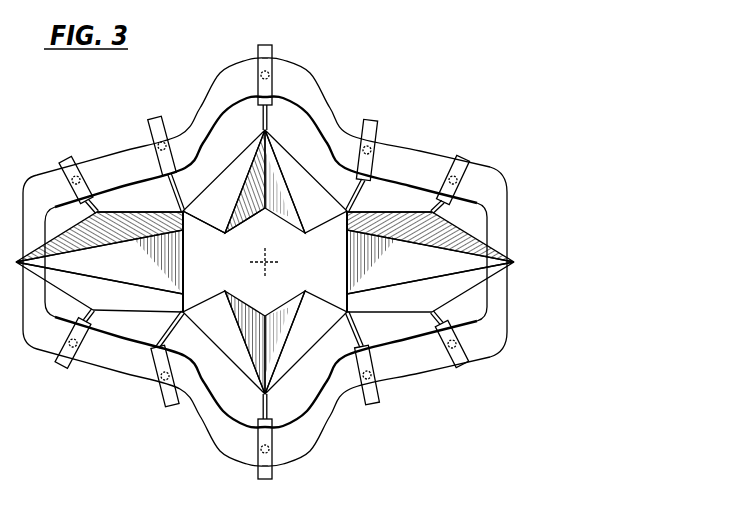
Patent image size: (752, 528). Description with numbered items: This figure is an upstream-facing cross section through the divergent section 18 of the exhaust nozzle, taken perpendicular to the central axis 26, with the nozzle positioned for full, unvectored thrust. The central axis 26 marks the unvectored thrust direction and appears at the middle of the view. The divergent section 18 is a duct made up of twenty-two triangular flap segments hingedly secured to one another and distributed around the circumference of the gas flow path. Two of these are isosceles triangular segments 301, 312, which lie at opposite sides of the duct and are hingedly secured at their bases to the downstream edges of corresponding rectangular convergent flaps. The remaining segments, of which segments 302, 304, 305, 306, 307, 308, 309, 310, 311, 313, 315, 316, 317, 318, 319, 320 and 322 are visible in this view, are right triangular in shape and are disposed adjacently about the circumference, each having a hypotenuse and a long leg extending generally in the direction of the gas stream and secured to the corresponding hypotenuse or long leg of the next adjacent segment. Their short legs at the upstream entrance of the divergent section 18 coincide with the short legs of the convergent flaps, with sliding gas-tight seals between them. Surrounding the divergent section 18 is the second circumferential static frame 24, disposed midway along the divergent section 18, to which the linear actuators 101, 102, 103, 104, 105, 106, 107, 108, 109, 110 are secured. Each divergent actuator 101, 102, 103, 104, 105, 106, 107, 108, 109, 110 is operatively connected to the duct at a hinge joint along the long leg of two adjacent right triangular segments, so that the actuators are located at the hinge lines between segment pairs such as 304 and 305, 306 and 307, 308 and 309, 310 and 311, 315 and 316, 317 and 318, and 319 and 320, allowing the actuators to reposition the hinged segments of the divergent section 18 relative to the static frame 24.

The divergent section 18 is at (124, 145).
The second circumferential static frame 24 is at (509, 193).
The central axis 26 is at (272, 264).
The linear actuator 101 is at (466, 158).
The linear actuator 102 is at (376, 123).
The linear actuator 103 is at (265, 45).
The linear actuator 104 is at (156, 118).
The linear actuator 105 is at (64, 165).
The linear actuator 106 is at (60, 357).
The linear actuator 107 is at (156, 403).
The linear actuator 108 is at (265, 480).
The linear actuator 109 is at (376, 405).
The linear actuator 110 is at (462, 364).
The isosceles triangular flap segment 301 is at (424, 277).
The right triangular flap segment 302 is at (446, 222).
The right triangular flap segment 304 is at (370, 212).
The right triangular flap segment 305 is at (307, 187).
The right triangular flap segment 306 is at (288, 215).
The right triangular flap segment 307 is at (263, 217).
The right triangular flap segment 308 is at (220, 179).
The right triangular flap segment 309 is at (152, 211).
The right triangular flap segment 310 is at (203, 230).
The right triangular flap segment 311 is at (82, 221).
The isosceles triangular flap segment 312 is at (126, 277).
The right triangular flap segment 313 is at (108, 299).
The right triangular flap segment 315 is at (147, 305).
The right triangular flap segment 316 is at (221, 333).
The right triangular flap segment 317 is at (258, 357).
The right triangular flap segment 318 is at (273, 358).
The right triangular flap segment 319 is at (307, 339).
The right triangular flap segment 320 is at (372, 305).
The right triangular flap segment 322 is at (452, 300).